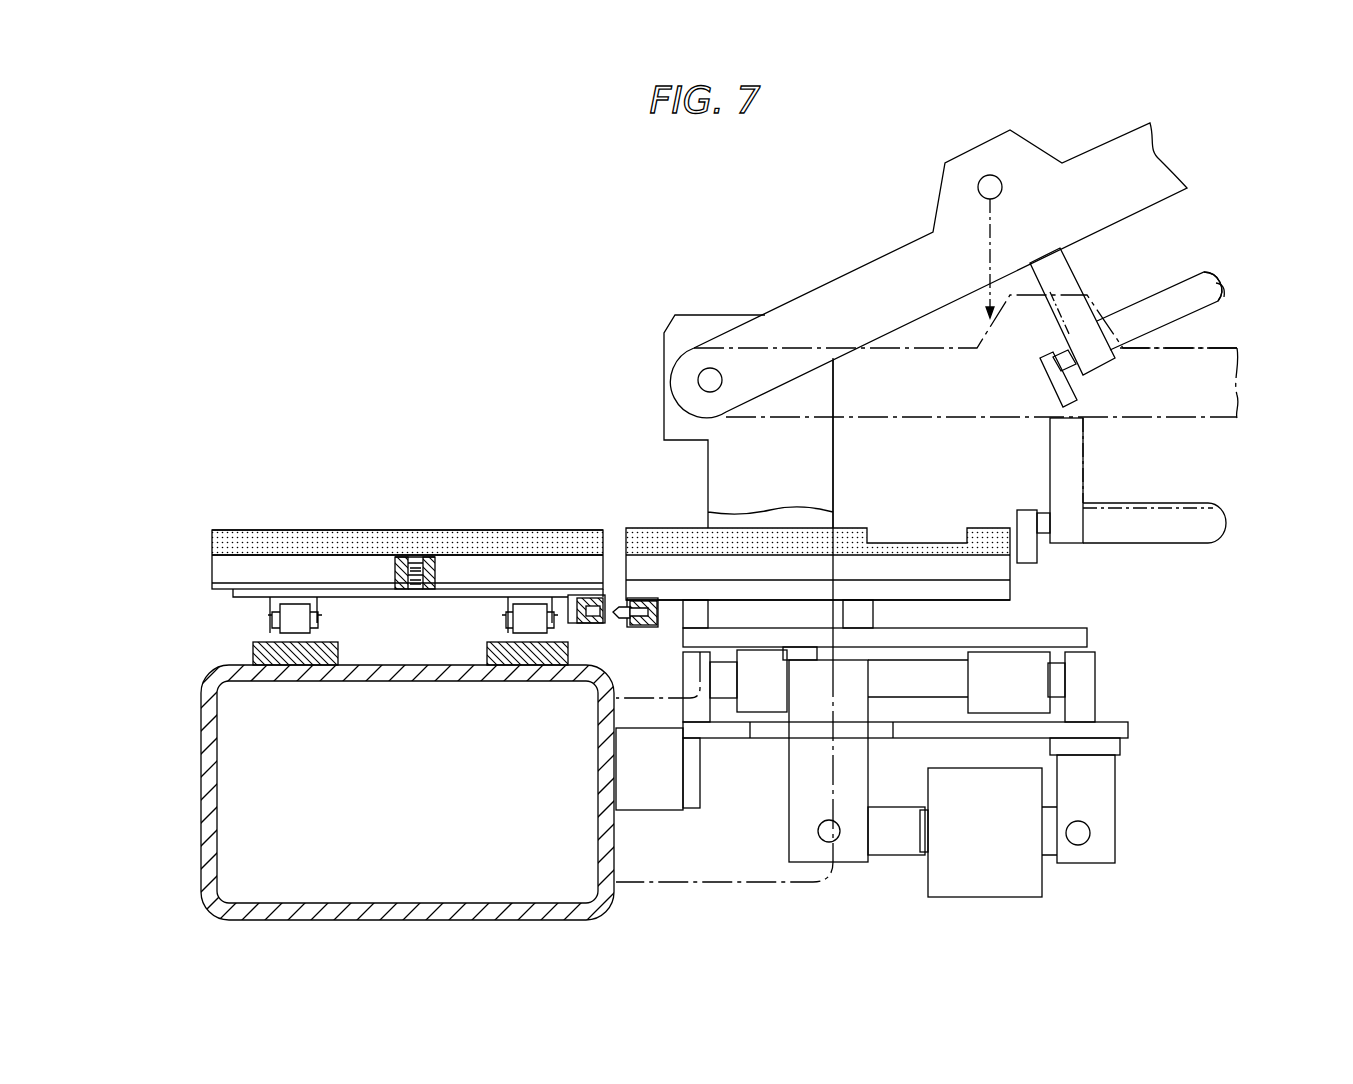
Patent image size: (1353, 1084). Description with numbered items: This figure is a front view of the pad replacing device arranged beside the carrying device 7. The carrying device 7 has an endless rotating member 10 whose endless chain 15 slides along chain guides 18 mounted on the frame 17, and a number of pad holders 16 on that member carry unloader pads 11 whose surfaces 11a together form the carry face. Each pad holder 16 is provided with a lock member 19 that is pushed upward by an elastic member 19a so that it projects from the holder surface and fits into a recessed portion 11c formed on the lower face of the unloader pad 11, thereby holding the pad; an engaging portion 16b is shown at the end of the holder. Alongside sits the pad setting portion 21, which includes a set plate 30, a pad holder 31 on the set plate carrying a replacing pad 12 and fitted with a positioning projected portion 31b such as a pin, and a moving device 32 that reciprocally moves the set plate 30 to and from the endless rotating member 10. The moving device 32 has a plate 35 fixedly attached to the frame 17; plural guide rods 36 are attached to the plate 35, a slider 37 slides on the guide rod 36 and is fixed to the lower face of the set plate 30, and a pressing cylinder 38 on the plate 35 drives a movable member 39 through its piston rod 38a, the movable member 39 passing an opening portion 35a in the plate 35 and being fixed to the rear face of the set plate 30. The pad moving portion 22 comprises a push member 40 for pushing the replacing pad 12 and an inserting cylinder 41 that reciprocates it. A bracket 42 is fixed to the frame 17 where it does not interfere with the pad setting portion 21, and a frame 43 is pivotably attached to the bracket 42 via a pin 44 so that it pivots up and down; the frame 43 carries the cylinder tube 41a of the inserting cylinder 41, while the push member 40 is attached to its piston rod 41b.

The carrying device 7 is at (217, 655).
The endless rotating member 10 is at (212, 562).
The unloader pad 11 is at (311, 530).
The surface of the unloader pad 11a is at (486, 529).
The recessed portion 11c is at (429, 556).
The replacing pad 12 is at (859, 527).
The endless chain 15 is at (503, 627).
The pad holder 16 is at (367, 593).
The engaging portion 16b is at (598, 620).
The frame 17 is at (201, 792).
The chain guide 18 is at (526, 666).
The lock member 19 is at (405, 556).
The elastic member 19a is at (414, 590).
The pad setting portion 21 is at (940, 763).
The pad moving portion 22 is at (1132, 303).
The set plate 30 is at (1040, 630).
The pad holder 31 is at (950, 594).
The positioning projected portion 31b is at (647, 628).
The moving device 32 is at (906, 866).
The plate 35 is at (1125, 730).
The opening portion 35a is at (764, 735).
The guide rod 36 is at (723, 692).
The slider 37 is at (1010, 700).
The pressing cylinder 38 is at (1012, 878).
The piston rod 38a is at (922, 818).
The movable member 39 is at (796, 822).
The push member 40 is at (1043, 386).
The inserting cylinder 41 is at (1193, 288).
The cylinder tube 41a is at (1224, 305).
The piston rod 41b is at (1070, 380).
The bracket 42 is at (718, 465).
The frame 43 is at (843, 282).
The pin 44 is at (698, 378).